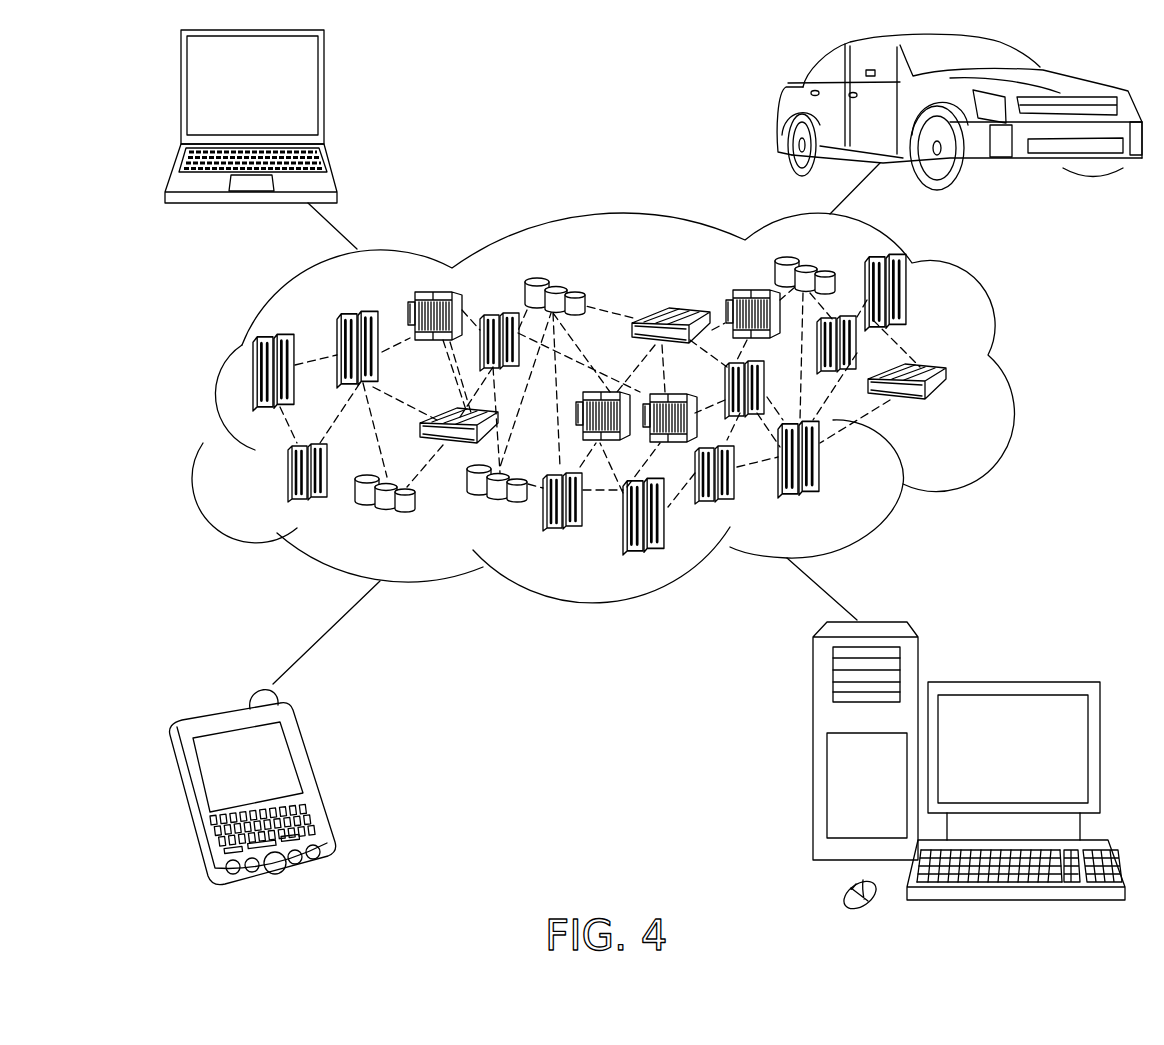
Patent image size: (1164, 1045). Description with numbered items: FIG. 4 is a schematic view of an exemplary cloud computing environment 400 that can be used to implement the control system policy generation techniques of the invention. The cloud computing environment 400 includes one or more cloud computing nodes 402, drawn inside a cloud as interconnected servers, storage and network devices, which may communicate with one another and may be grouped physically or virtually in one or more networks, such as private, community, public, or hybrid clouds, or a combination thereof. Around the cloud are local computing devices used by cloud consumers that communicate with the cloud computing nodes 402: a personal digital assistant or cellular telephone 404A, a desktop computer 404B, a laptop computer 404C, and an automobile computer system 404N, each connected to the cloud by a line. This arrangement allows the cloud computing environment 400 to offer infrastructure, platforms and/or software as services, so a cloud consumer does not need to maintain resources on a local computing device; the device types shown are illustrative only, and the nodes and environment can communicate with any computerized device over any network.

The cloud computing environment 400 is at (1013, 380).
The cloud computing nodes 402 is at (952, 412).
The personal digital assistant (PDA) or cellular telephone 404A is at (313, 781).
The desktop computer 404B is at (1010, 682).
The laptop computer 404C is at (326, 88).
The automobile computer system 404N is at (785, 105).